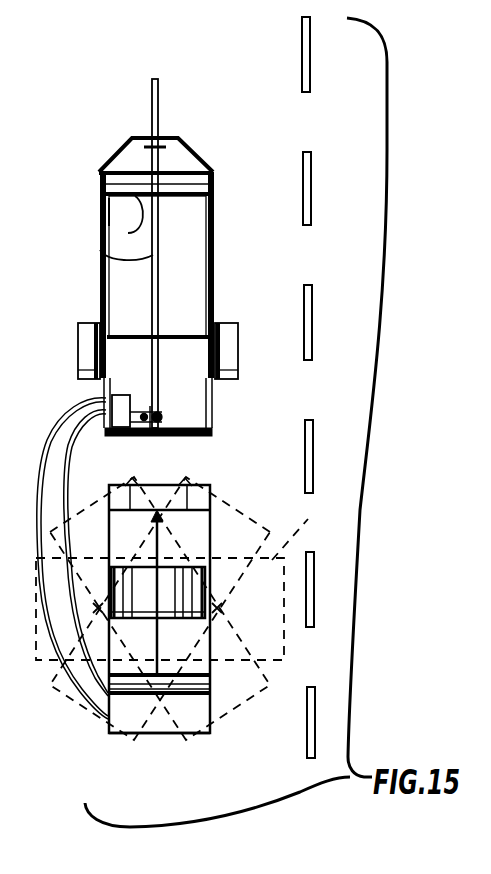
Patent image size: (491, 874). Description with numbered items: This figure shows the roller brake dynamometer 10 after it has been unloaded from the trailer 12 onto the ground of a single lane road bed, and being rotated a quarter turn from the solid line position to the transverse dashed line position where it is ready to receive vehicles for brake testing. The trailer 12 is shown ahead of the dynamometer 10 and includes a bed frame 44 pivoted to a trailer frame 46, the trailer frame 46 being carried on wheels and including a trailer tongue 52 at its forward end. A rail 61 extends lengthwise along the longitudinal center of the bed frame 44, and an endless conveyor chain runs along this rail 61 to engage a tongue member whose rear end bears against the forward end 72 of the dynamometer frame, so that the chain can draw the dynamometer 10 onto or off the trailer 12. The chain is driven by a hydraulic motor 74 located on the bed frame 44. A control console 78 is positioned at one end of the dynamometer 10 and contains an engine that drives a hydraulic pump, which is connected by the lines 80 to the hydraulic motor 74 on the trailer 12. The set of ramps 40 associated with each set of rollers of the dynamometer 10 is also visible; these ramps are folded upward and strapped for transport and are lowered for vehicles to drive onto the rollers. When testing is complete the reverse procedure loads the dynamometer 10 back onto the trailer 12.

The roller brake dynamometer 10 is at (314, 513).
The trailer 12 is at (196, 148).
The set of ramps 40 is at (155, 522).
The bed frame 44 is at (128, 233).
The trailer frame 46 is at (104, 212).
The trailer tongue 52 is at (158, 110).
The rail 61 is at (100, 250).
The forward end of the dynamometer frame 72 is at (165, 485).
The hydraulic motor 74 is at (139, 426).
The control console 78 is at (193, 722).
The lines 80 is at (80, 398).